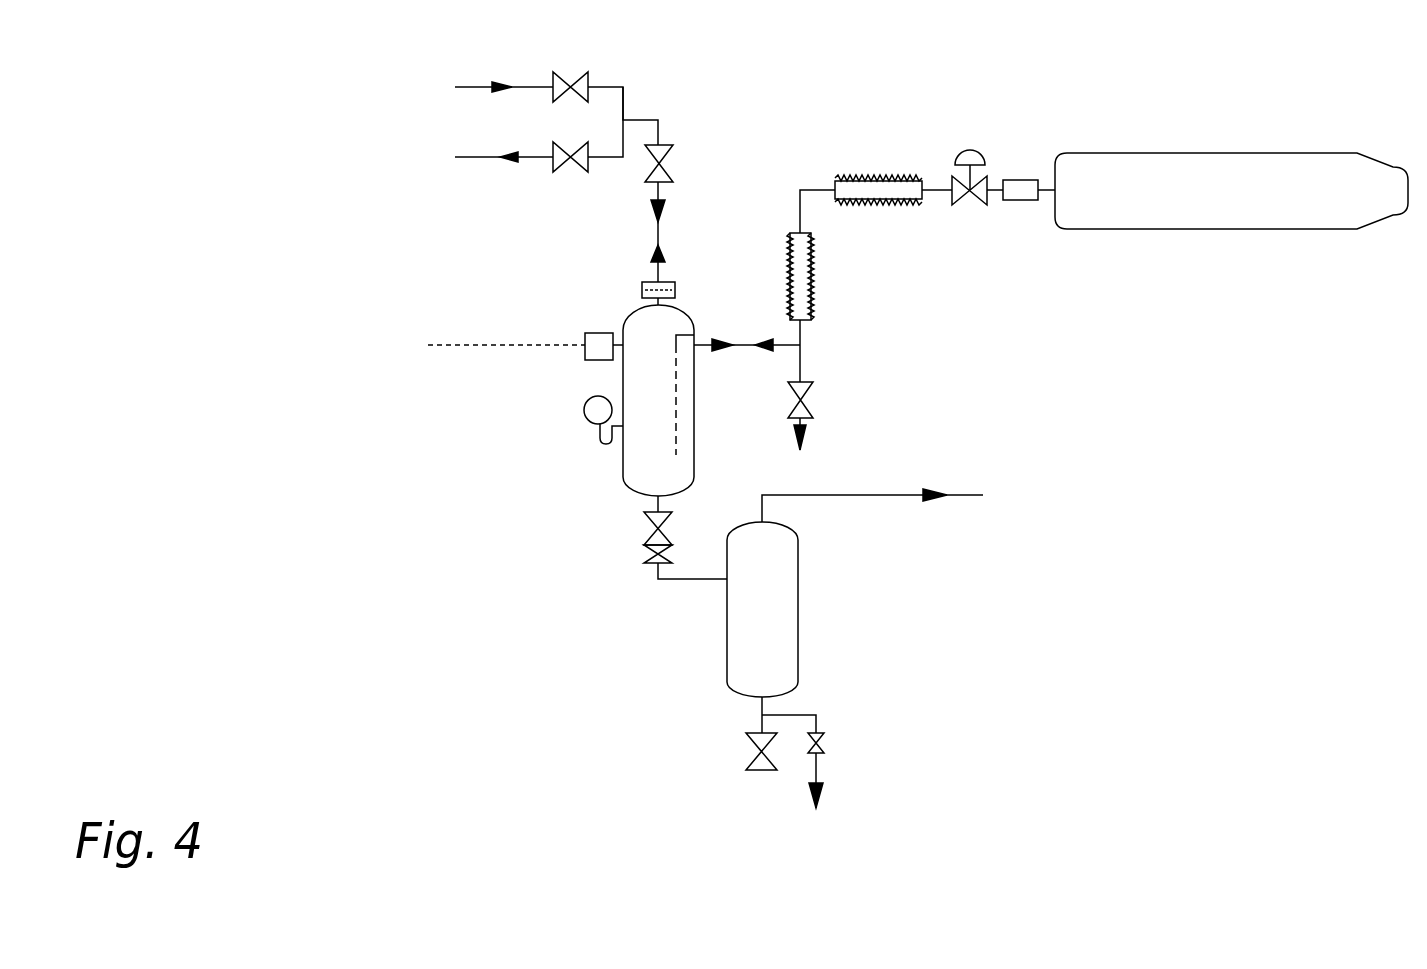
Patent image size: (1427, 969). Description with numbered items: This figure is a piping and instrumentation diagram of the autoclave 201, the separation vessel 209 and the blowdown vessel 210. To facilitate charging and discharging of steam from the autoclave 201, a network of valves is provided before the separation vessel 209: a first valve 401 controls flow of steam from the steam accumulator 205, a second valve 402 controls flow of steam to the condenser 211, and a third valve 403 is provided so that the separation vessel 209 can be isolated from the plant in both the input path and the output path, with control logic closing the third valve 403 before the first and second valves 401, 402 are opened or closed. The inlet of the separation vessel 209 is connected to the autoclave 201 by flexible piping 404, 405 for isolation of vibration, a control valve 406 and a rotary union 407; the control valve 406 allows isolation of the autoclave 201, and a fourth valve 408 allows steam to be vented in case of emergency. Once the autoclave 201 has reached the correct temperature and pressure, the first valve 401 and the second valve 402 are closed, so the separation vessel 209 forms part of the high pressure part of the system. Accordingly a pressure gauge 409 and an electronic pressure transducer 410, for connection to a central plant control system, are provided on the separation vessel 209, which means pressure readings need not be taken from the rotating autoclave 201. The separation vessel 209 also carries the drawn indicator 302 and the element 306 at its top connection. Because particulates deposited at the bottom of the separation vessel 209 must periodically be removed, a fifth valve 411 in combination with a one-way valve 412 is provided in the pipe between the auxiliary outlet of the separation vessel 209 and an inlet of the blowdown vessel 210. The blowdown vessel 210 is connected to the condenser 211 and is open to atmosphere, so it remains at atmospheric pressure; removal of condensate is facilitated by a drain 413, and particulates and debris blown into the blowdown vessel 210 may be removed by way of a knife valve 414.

The autoclave 201 is at (1332, 218).
The steam accumulator 205 is at (323, 86).
The separation vessel 209 is at (690, 325).
The blowdown vessel 210 is at (727, 670).
The condenser 211 is at (722, 333).
The level indicator 302 is at (676, 410).
The filter 306 is at (642, 286).
The first valve 401 is at (588, 78).
The second valve 402 is at (553, 165).
The third valve 403 is at (673, 150).
The flexible piping 404 is at (813, 295).
The flexible piping 405 is at (882, 178).
The control valve 406 is at (978, 160).
The rotary union 407 is at (1003, 200).
The fourth valve 408 is at (808, 414).
The pressure gauge 409 is at (584, 412).
The electronic pressure transducer 410 is at (585, 358).
The fifth valve 411 is at (668, 520).
The one-way valve 412 is at (648, 556).
The drain 413 is at (846, 742).
The knife valve 414 is at (752, 768).